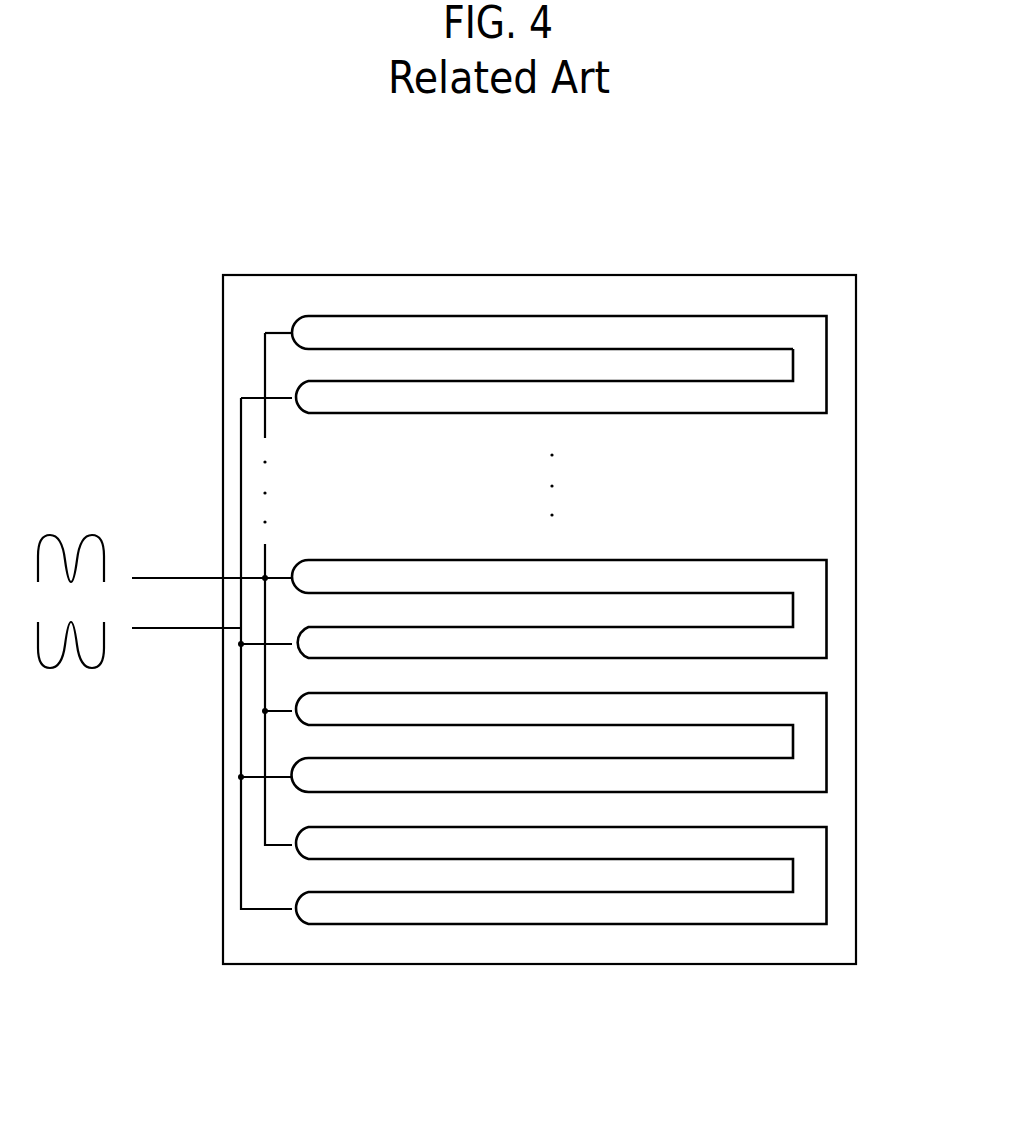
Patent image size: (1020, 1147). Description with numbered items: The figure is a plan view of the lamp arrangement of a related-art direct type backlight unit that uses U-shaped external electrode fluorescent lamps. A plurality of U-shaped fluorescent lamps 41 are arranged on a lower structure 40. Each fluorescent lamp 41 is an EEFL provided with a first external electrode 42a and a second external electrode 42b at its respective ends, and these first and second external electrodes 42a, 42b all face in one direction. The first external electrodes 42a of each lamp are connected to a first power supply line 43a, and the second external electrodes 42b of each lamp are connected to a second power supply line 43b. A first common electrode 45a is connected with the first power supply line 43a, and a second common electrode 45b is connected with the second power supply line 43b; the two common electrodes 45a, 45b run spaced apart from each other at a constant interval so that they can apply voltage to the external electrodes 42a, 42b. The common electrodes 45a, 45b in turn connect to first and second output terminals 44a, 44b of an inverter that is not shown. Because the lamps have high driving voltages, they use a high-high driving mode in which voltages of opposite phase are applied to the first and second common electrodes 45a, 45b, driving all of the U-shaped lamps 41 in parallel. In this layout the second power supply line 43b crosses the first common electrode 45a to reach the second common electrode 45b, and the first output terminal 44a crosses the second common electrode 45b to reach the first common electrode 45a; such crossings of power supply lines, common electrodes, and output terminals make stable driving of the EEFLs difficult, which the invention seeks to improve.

The lower structure 40 is at (543, 293).
The fluorescent lamp 41 is at (810, 732).
The first external electrode 42a is at (310, 316).
The second external electrode 42b is at (290, 383).
The first power supply line 43a is at (280, 333).
The second power supply line 43b is at (280, 400).
The first output terminal 44a is at (165, 578).
The second output terminal 44b is at (165, 628).
The first common electrode 45a is at (262, 743).
The second common electrode 45b is at (240, 815).